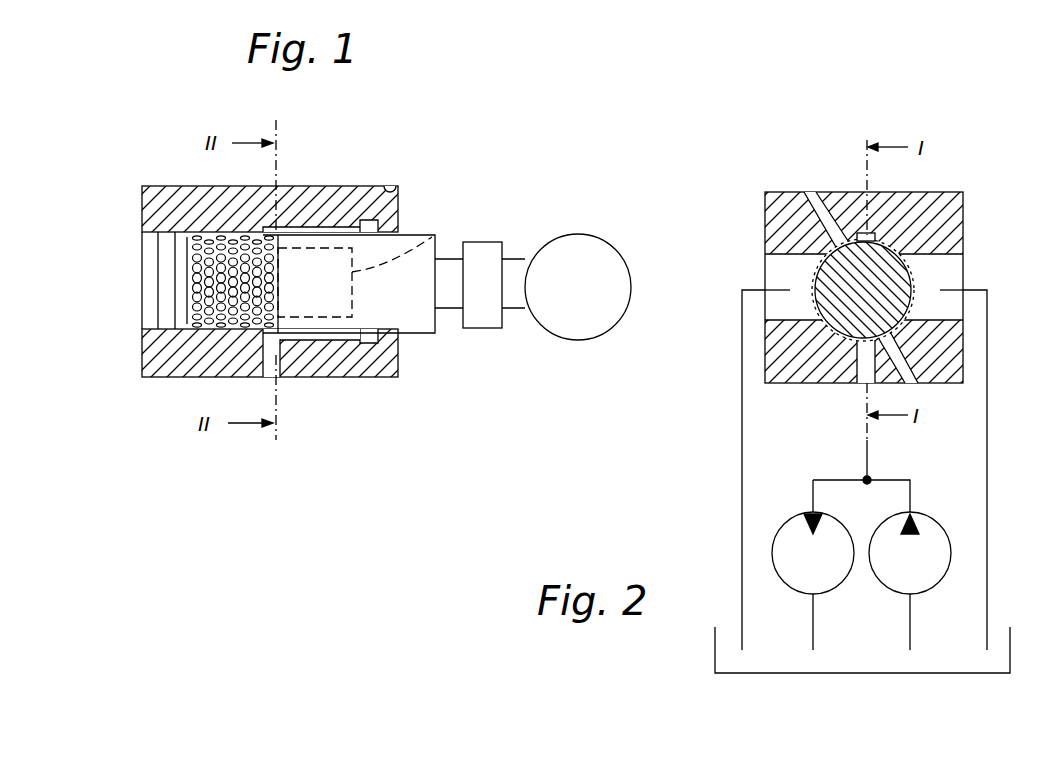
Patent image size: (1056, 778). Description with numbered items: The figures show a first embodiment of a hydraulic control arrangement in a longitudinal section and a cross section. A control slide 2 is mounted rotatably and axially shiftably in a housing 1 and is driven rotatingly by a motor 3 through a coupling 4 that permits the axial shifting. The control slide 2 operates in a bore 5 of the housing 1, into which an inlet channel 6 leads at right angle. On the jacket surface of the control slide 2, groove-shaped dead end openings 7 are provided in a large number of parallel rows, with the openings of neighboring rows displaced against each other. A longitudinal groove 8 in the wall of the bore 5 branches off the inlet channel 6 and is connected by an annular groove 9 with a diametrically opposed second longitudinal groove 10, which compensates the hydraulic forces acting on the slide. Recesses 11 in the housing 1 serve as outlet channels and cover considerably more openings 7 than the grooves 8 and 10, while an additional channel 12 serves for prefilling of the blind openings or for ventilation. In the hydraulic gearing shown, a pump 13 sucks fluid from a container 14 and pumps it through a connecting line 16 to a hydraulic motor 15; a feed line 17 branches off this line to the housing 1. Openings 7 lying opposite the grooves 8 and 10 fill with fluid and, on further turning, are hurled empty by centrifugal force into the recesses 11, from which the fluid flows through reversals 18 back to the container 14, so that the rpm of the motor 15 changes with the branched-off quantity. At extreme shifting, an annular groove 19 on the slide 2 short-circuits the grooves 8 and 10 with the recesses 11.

In FIG. 1, the housing 1 is at (391, 191).
In FIG. 2, the housing 1 is at (950, 232).
In FIG. 1, the control slide 2 is at (423, 334).
In FIG. 2, the control slide 2 is at (812, 277).
In FIG. 1, the motor 3 is at (580, 340).
In FIG. 1, the coupling 4 is at (489, 327).
In FIG. 1, the bore 5 is at (150, 305).
In FIG. 2, the inlet channel 6 is at (850, 378).
In FIG. 1, the dead end openings 7 is at (275, 298).
In FIG. 2, the dead end openings 7 is at (906, 296).
In FIG. 1, the longitudinal groove 8 is at (318, 341).
In FIG. 2, the longitudinal groove 8 is at (832, 336).
In FIG. 1, the annular groove 9 is at (366, 344).
In FIG. 1, the second longitudinal groove 10 is at (299, 231).
In FIG. 2, the second longitudinal groove 10 is at (878, 233).
In FIG. 1, the recesses 11 is at (402, 246).
In FIG. 2, the recesses 11 is at (950, 298).
In FIG. 2, the additional channel 12 is at (815, 216).
In FIG. 2, the pump 13 is at (910, 581).
In FIG. 2, the container 14 is at (1010, 652).
In FIG. 2, the hydraulic motor 15 is at (813, 581).
In FIG. 2, the connecting line 16 is at (896, 480).
In FIG. 2, the feed line 17 is at (866, 455).
In FIG. 2, the reversals 18 is at (742, 440).
In FIG. 1, the annular groove 19 is at (181, 332).